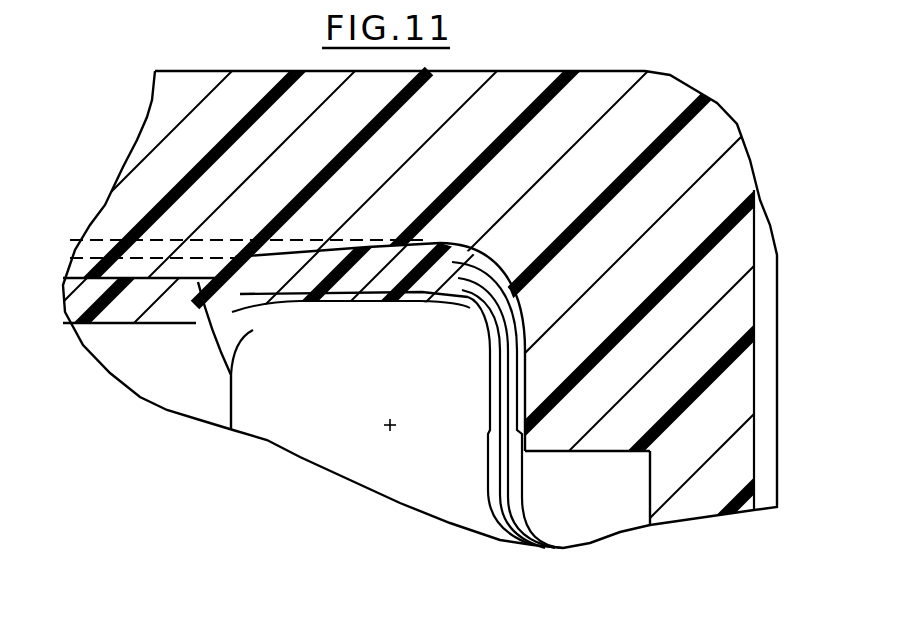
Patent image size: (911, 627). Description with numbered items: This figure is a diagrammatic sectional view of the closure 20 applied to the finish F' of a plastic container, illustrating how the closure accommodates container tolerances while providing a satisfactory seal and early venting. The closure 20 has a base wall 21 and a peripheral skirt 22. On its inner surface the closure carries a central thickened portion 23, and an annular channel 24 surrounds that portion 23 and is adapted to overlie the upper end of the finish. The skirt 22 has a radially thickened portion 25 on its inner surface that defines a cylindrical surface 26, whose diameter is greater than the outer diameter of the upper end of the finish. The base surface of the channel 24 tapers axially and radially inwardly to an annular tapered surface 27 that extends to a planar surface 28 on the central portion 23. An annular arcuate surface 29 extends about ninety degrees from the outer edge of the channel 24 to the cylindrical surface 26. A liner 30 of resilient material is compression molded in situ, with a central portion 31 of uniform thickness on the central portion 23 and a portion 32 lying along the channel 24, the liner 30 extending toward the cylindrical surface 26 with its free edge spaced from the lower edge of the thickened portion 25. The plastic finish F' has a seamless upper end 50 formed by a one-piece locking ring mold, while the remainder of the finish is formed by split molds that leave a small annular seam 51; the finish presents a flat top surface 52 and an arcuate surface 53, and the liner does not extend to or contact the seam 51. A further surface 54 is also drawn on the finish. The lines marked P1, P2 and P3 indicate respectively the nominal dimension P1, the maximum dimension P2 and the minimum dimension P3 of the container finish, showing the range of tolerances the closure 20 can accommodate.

The closure 20 is at (606, 60).
The base wall 21 is at (518, 71).
The peripheral skirt 22 is at (735, 482).
The central thickened portion 23 is at (135, 160).
The annular channel 24 is at (280, 254).
The radially thickened portion 25 is at (610, 438).
The cylindrical surface 26 is at (550, 411).
The annular tapered surface 27 is at (212, 328).
The planar surface 28 is at (65, 303).
The annular arcuate surface 29 is at (455, 252).
The liner 30 is at (162, 327).
The central portion of liner 31 is at (103, 333).
The liner portion along channel 32 is at (342, 268).
The seamless upper end of finish 50 is at (255, 332).
The annular seam 51 is at (483, 424).
The flat top surface 52 is at (360, 302).
The arcuate surface 53 is at (482, 354).
The intermediate layer 54 is at (500, 398).
The nominal dimension P1 is at (518, 536).
The maximum dimension P2 is at (530, 511).
The minimum dimension P3 is at (497, 508).
The finish F' is at (200, 448).